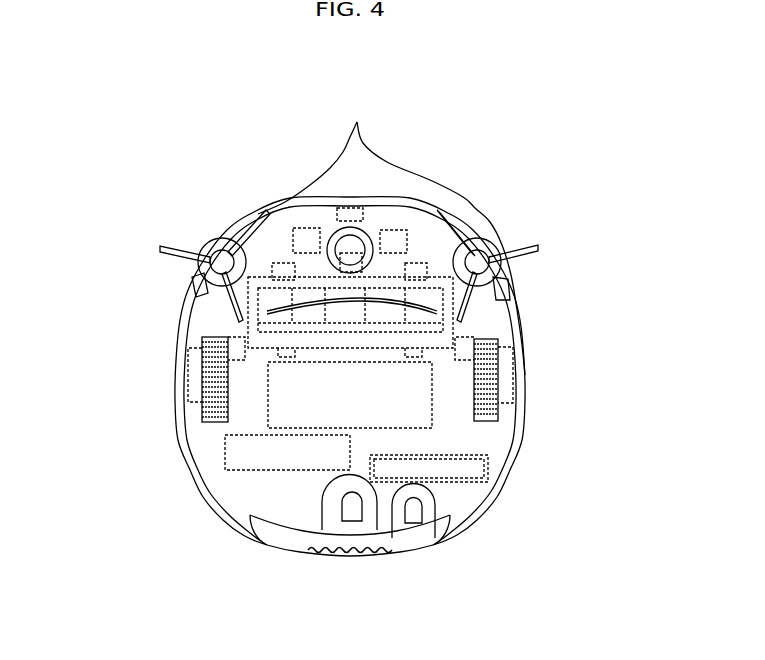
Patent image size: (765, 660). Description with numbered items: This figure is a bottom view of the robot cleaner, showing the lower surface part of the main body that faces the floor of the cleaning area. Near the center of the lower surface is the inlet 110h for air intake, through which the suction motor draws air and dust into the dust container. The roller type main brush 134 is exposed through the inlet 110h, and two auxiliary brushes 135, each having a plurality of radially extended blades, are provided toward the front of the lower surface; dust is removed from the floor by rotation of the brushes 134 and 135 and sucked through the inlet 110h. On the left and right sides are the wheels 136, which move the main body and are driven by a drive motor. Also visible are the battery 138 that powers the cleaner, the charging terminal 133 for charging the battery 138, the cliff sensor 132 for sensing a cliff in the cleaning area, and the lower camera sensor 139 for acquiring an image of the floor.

The cliff sensor 132 is at (344, 208).
The charging terminal 133 is at (305, 245).
The main brush 134 is at (423, 318).
The auxiliary brushes 135 is at (163, 247).
The wheel 136 is at (215, 380).
The battery 138 is at (457, 468).
The lower camera sensor 139 is at (413, 517).
The inlet 110h is at (272, 320).